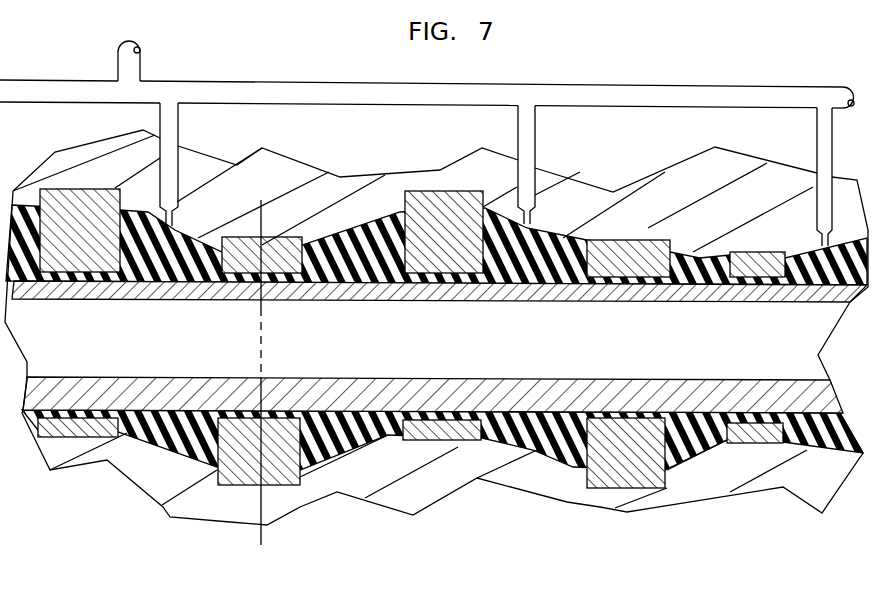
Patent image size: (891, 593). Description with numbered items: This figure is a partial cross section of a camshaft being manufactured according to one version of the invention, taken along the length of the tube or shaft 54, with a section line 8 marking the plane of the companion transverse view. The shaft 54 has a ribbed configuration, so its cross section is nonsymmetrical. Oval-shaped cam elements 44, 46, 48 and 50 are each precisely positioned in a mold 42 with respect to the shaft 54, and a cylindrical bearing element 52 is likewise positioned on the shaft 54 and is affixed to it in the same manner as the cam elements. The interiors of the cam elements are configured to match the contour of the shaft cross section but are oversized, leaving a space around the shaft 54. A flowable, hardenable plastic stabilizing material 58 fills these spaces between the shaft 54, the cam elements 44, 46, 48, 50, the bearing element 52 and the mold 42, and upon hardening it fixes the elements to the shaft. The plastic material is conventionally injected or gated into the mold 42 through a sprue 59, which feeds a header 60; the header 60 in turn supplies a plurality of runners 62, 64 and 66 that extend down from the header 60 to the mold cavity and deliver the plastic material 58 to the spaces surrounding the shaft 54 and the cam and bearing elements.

The section line 8- 8 is at (231, 373).
The mold 42 is at (727, 177).
The cam element 44 is at (90, 188).
The cam element 46 is at (217, 488).
The cam element 48 is at (425, 191).
The cam element 50 is at (650, 240).
The cylindrical bearing element 52 is at (765, 252).
The tube or shaft 54 is at (447, 347).
The plastic stabilizing material 58 is at (177, 410).
The sprue 59 is at (141, 64).
The header 60 is at (332, 82).
The runner 62 is at (180, 122).
The runner 64 is at (537, 131).
The runner 66 is at (833, 138).